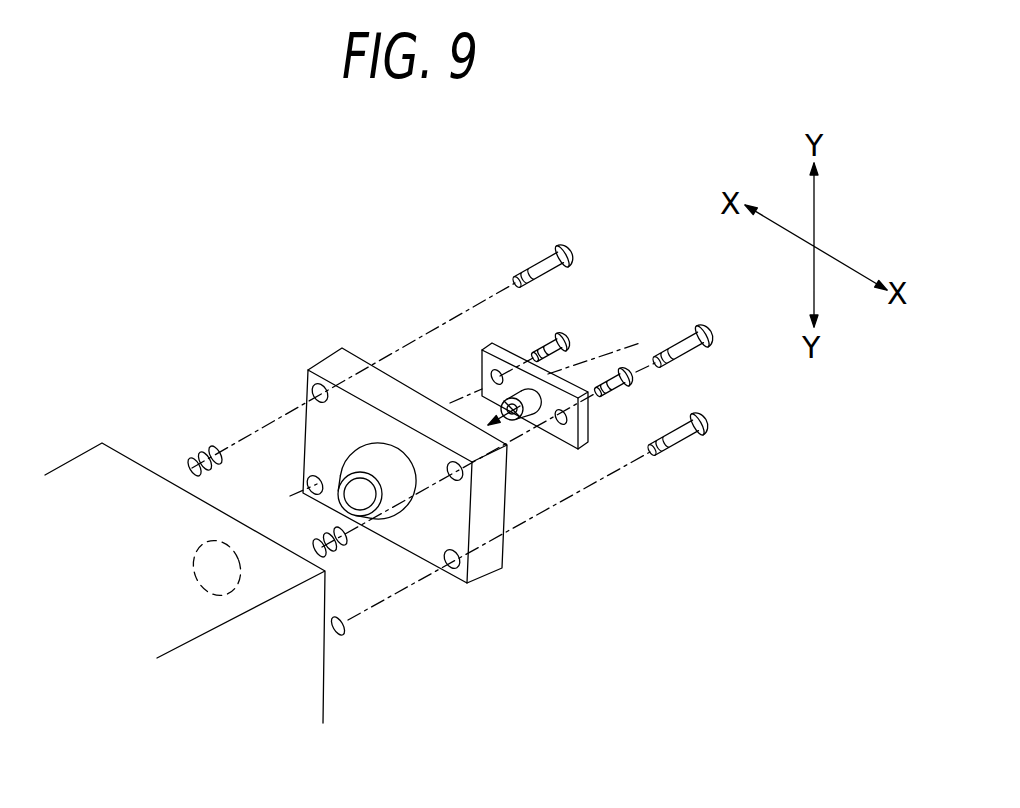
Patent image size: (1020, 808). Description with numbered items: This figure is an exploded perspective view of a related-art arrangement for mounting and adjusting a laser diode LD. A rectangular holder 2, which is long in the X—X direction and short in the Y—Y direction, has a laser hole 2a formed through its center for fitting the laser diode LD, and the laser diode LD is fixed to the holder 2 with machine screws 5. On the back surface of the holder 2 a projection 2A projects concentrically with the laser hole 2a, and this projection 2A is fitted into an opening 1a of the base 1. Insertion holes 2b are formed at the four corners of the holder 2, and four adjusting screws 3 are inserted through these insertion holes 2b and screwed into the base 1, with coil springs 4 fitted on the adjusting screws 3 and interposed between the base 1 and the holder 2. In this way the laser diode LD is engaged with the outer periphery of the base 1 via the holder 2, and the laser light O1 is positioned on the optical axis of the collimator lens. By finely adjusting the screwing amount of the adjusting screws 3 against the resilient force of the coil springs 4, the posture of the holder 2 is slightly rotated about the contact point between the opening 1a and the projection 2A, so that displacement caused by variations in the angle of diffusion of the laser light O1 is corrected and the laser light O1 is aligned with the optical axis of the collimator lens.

The base 1 is at (85, 461).
The opening 1a is at (193, 568).
The holder 2 is at (320, 349).
The projection 2A is at (376, 466).
The laser hole 2a is at (362, 519).
The insertion holes 2b is at (309, 484).
The adjusting screws 3 is at (540, 258).
The coil springs 4 is at (183, 460).
The machine screws 5 is at (550, 342).
The laser light O1 is at (612, 352).
The laser diode LD is at (561, 448).